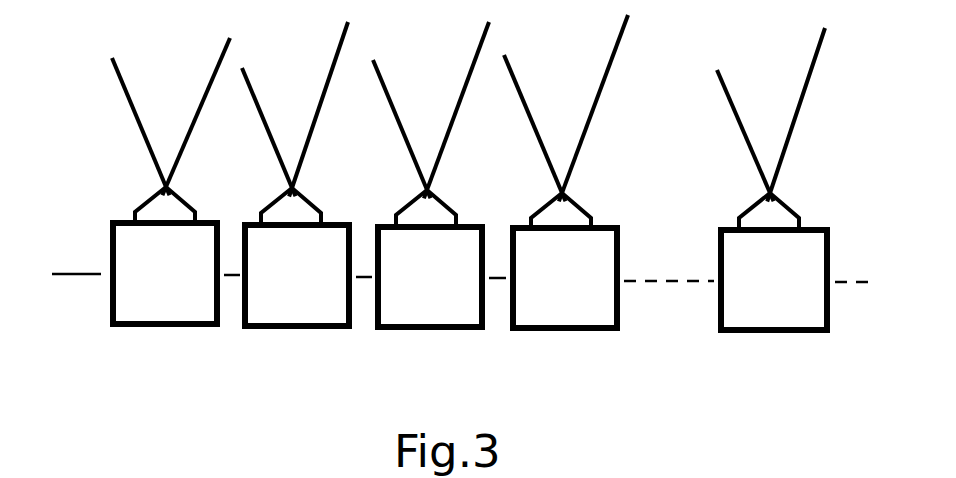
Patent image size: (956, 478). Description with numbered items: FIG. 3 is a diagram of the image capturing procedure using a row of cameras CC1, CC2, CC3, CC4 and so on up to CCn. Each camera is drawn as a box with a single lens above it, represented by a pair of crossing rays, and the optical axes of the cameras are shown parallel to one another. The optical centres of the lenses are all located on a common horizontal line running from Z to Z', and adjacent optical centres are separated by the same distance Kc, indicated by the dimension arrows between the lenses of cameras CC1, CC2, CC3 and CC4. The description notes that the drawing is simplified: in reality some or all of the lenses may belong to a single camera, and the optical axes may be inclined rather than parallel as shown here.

The camera CC1 is at (171, 206).
The camera CC2 is at (295, 199).
The camera CC3 is at (431, 199).
The camera CC4 is at (566, 196).
The camera CCn is at (772, 204).
The distance Kc is at (169, 188).
The horizontal line end Z is at (66, 276).
The horizontal line end Z' is at (868, 284).